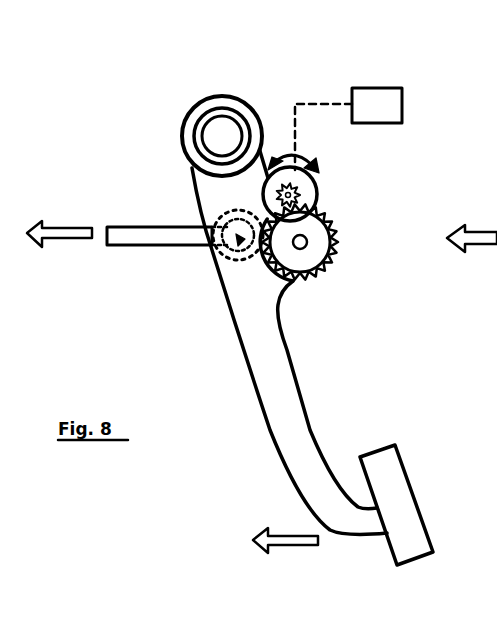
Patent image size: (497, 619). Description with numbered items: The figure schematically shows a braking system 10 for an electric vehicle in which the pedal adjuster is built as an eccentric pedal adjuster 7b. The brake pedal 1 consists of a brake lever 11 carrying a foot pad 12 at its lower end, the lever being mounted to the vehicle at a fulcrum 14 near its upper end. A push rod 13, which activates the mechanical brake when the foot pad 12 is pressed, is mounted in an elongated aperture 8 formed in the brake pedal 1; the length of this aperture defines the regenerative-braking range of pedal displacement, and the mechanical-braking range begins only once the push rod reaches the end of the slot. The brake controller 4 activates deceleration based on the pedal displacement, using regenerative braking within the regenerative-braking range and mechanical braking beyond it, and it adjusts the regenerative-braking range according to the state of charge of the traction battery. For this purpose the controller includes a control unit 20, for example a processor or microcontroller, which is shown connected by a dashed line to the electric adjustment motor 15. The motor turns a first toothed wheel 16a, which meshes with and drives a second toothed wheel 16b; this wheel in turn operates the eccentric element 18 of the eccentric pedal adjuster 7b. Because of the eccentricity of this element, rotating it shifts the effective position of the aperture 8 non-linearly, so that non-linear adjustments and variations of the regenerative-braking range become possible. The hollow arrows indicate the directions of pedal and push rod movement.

The braking system 10 is at (96, 76).
The fulcrum 14 is at (223, 96).
The brake controller 4 is at (273, 116).
The control unit 20 is at (376, 88).
The electric adjustment motor 15 is at (324, 184).
The toothed wheel 16a is at (318, 202).
The toothed wheel 16b is at (322, 272).
The eccentric element 18 is at (335, 223).
The eccentric pedal adjuster 7b is at (360, 250).
The elongated aperture 8 is at (222, 262).
The push rod 13 is at (163, 247).
The brake lever 11 is at (291, 352).
The brake pedal 1 is at (318, 405).
The foot pad 12 is at (407, 480).